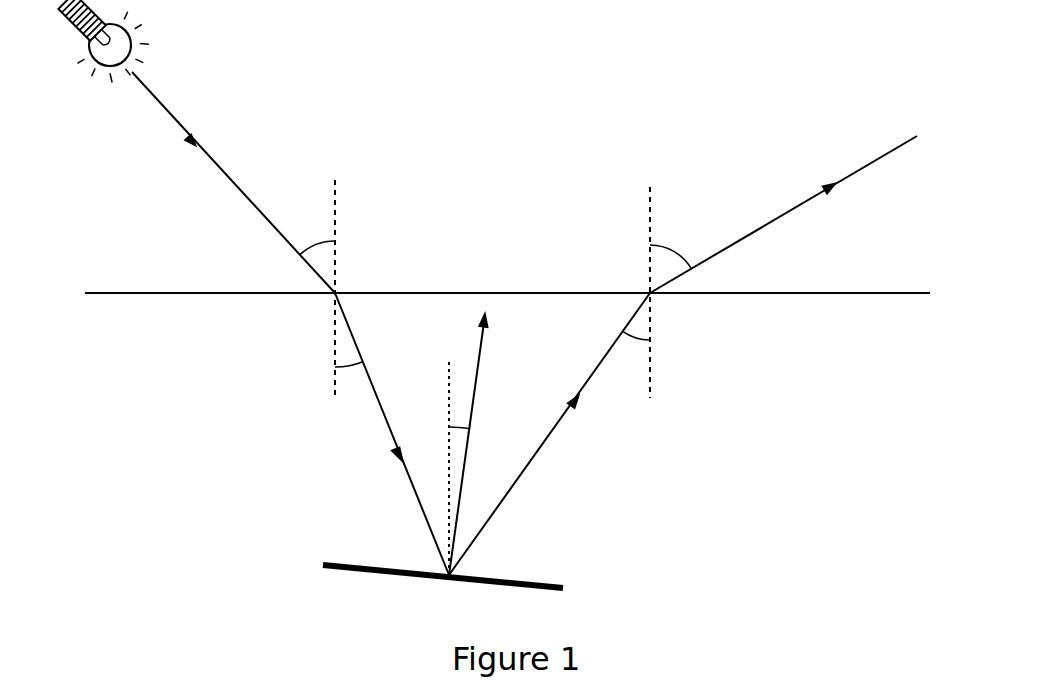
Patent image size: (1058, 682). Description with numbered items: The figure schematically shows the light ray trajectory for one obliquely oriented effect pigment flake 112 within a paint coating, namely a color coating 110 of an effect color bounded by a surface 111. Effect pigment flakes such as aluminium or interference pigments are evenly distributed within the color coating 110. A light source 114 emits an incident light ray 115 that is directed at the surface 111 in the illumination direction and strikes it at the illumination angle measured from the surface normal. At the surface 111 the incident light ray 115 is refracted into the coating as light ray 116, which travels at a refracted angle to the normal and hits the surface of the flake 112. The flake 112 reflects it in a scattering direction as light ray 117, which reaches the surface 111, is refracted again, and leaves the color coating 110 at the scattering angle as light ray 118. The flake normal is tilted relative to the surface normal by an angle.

The color coating 110 is at (749, 386).
The surface 111 is at (850, 292).
The effect pigment flake 112 is at (535, 578).
The light source 114 is at (136, 38).
The incident light ray 115 is at (223, 175).
The light ray 116 is at (372, 385).
The light ray 117 is at (553, 433).
The light ray 118 is at (770, 220).